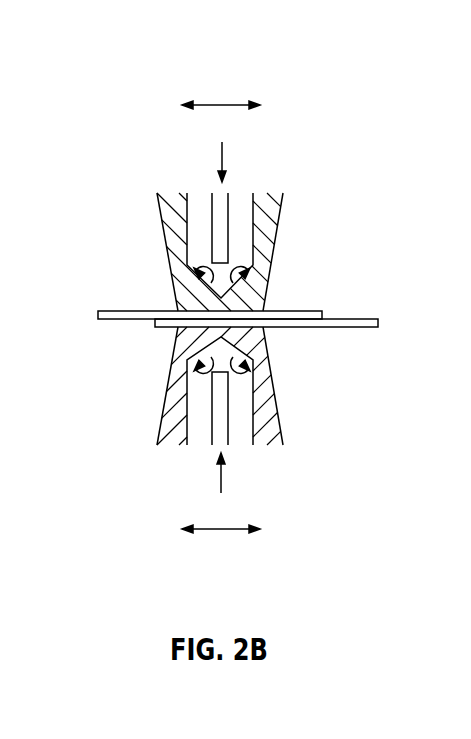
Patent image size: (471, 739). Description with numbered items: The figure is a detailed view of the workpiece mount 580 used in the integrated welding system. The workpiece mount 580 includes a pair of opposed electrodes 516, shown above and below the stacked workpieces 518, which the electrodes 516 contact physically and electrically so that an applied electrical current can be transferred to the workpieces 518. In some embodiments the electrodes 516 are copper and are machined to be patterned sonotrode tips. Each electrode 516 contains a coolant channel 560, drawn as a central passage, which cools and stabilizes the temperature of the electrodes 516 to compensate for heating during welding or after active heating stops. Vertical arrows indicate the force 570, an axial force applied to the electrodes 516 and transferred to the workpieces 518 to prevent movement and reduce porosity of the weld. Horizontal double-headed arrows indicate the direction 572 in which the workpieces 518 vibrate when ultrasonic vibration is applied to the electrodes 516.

The workpiece mount 580 is at (264, 252).
The electrodes 516 is at (169, 258).
The coolant channels 560 is at (230, 245).
The workpieces 518 is at (363, 319).
The force 570 is at (231, 157).
The direction 572 is at (219, 101).